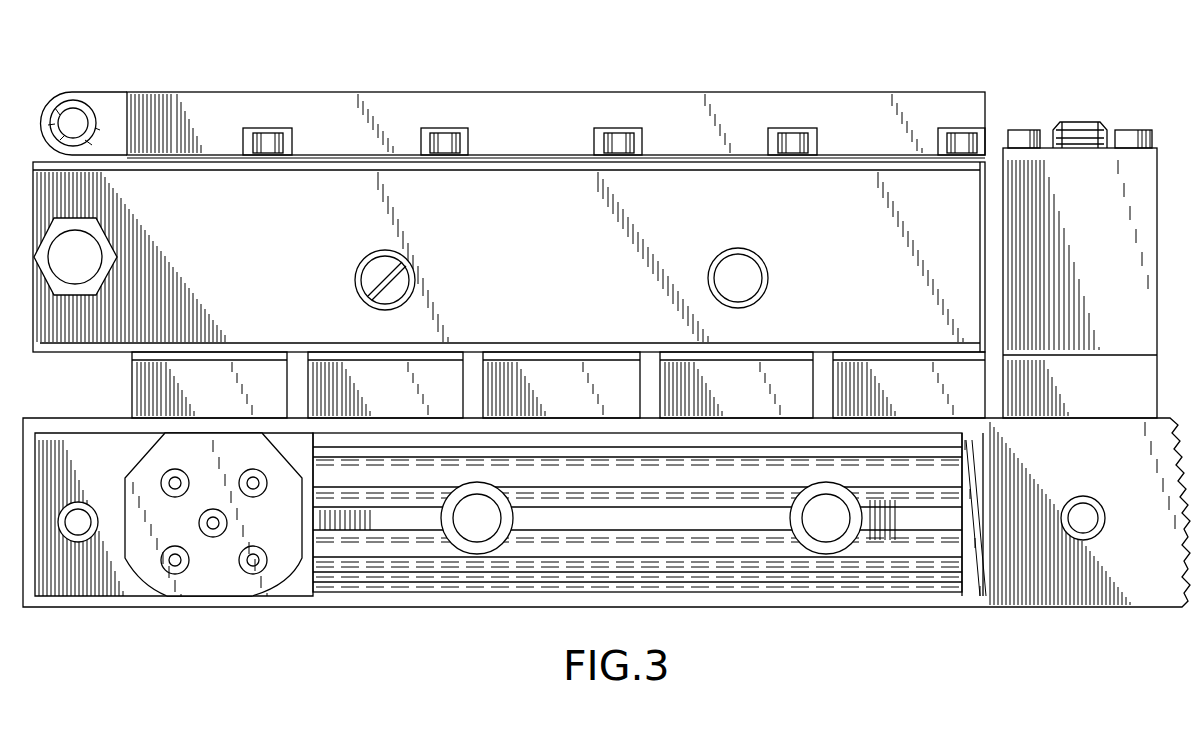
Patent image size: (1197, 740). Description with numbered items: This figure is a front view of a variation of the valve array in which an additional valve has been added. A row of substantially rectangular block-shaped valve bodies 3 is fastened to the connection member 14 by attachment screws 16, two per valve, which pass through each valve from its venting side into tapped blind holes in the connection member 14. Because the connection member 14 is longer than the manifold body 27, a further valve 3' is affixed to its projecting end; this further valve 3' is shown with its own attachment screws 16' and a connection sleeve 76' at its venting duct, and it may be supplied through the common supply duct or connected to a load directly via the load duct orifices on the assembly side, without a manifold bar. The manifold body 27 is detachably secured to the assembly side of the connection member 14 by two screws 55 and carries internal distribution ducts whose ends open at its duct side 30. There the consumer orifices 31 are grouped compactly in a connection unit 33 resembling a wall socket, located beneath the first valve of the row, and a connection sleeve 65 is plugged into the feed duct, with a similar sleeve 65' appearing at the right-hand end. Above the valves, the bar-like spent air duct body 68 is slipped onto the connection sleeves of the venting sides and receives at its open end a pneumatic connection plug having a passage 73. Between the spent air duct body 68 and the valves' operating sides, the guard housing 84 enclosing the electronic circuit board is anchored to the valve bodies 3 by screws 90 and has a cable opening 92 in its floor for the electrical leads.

The valve body 3 is at (558, 385).
The further valve 3' is at (1080, 283).
The connection member 14 is at (913, 607).
The attachment screw 16 is at (614, 104).
The end terminal clip 16' is at (1081, 102).
The manifold body 27 is at (966, 607).
The duct side 30 is at (118, 607).
The consumer orifice 31 is at (170, 608).
The connection unit 33 is at (258, 608).
The screw 55 is at (488, 548).
The connection sleeve 65 is at (78, 498).
The hole 65' is at (1093, 496).
The spent air duct body 68 is at (548, 132).
The passage 73 is at (92, 108).
The screw 76' is at (1080, 102).
The guard housing 84 is at (545, 249).
The screw 90 is at (357, 292).
The cable opening 92 is at (128, 230).